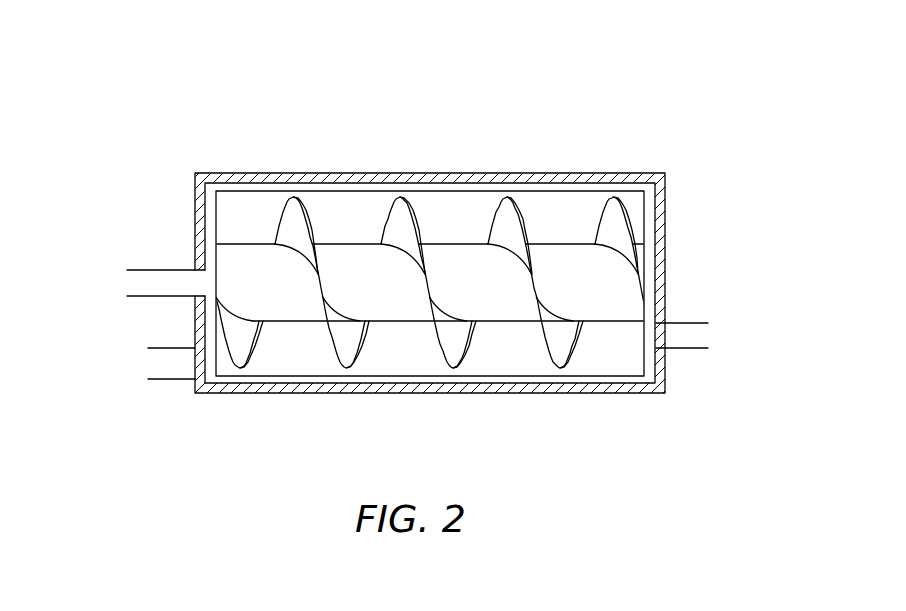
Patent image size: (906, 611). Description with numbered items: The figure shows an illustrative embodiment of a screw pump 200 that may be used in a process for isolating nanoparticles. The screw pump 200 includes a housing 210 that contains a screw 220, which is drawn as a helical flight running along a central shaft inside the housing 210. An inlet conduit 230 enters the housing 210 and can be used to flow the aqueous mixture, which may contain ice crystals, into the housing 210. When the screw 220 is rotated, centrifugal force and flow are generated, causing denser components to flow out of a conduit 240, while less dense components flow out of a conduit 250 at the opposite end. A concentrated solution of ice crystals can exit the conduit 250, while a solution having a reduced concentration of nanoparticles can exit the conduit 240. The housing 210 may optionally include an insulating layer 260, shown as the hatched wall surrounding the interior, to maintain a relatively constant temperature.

The screw pump 200 is at (304, 88).
The housing 210 is at (575, 189).
The screw 220 is at (455, 262).
The inlet conduit 230 is at (138, 282).
The conduit 240 is at (158, 362).
The conduit 250 is at (698, 335).
The insulating layer 260 is at (380, 393).